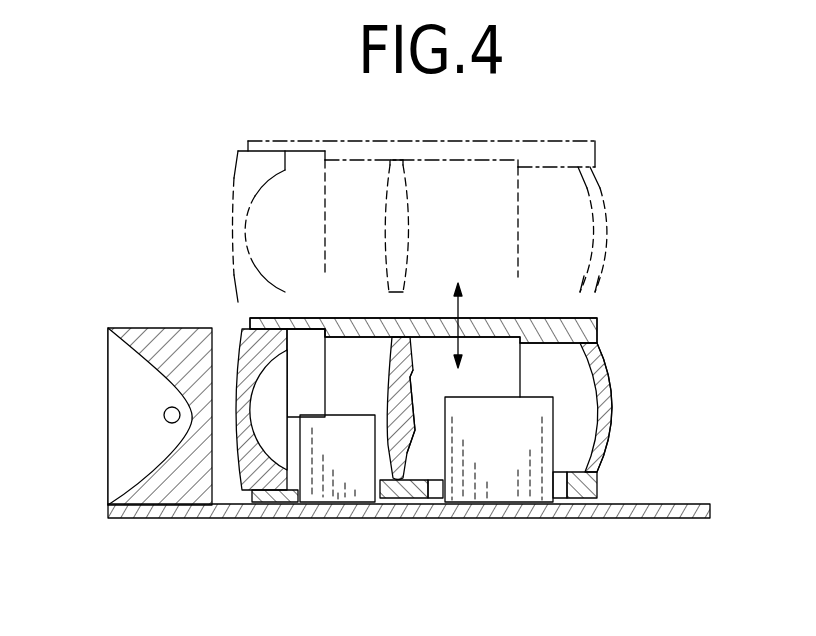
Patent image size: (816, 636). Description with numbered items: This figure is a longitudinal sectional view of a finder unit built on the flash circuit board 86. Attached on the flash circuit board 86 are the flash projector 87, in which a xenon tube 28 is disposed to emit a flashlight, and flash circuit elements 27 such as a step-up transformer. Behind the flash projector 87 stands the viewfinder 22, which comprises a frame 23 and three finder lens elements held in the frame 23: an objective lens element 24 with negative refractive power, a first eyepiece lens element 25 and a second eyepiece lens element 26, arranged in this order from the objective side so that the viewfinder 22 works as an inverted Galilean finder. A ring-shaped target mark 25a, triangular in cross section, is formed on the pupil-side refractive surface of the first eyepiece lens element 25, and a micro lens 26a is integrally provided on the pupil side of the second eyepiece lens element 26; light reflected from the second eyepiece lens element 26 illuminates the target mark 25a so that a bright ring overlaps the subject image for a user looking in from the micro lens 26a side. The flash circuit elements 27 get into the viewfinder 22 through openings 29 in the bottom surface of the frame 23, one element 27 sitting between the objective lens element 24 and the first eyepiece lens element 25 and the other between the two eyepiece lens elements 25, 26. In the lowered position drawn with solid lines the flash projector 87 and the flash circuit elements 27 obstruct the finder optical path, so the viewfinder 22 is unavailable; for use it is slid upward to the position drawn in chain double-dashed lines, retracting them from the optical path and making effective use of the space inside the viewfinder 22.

The viewfinder 22 is at (598, 316).
The frame 23 is at (497, 317).
The objective lens element 24 is at (245, 350).
The first eyepiece lens element 25 is at (388, 358).
The target mark 25a is at (412, 373).
The second eyepiece lens element 26 is at (600, 355).
The micro lens 26a is at (612, 405).
The flash circuit elements 27 is at (340, 497).
The xenon tube 28 is at (164, 415).
The openings 29 is at (381, 490).
The flash circuit board 86 is at (275, 508).
The flash projector 87 is at (108, 348).